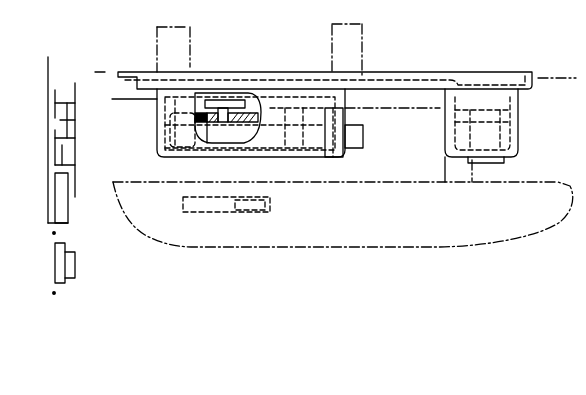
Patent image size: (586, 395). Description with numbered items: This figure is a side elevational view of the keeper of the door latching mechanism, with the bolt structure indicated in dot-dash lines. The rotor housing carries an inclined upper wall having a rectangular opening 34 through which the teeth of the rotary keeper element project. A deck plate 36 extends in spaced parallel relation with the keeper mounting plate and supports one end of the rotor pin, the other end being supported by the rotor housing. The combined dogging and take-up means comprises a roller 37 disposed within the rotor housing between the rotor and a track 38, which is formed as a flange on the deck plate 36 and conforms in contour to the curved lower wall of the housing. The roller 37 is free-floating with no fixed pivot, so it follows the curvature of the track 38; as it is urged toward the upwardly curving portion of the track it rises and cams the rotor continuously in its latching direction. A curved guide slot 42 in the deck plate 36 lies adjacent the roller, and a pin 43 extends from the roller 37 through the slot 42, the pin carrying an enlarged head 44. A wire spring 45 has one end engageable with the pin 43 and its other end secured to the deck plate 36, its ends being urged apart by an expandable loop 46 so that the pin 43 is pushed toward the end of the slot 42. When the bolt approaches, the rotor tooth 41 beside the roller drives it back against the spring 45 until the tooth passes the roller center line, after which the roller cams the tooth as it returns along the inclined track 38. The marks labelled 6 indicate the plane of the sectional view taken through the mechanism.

The section line 6- 6 is at (116, 60).
The rectangular opening 34 is at (352, 150).
The deck plate 36 is at (316, 72).
The roller 37 is at (233, 122).
The track 38 is at (175, 158).
The tooth 41 is at (257, 113).
The curved guide slot 42 is at (199, 93).
The pin 43 is at (204, 130).
The enlarged head 44 is at (231, 100).
The wire spring 45 is at (270, 88).
The expandable loop 46 is at (157, 128).